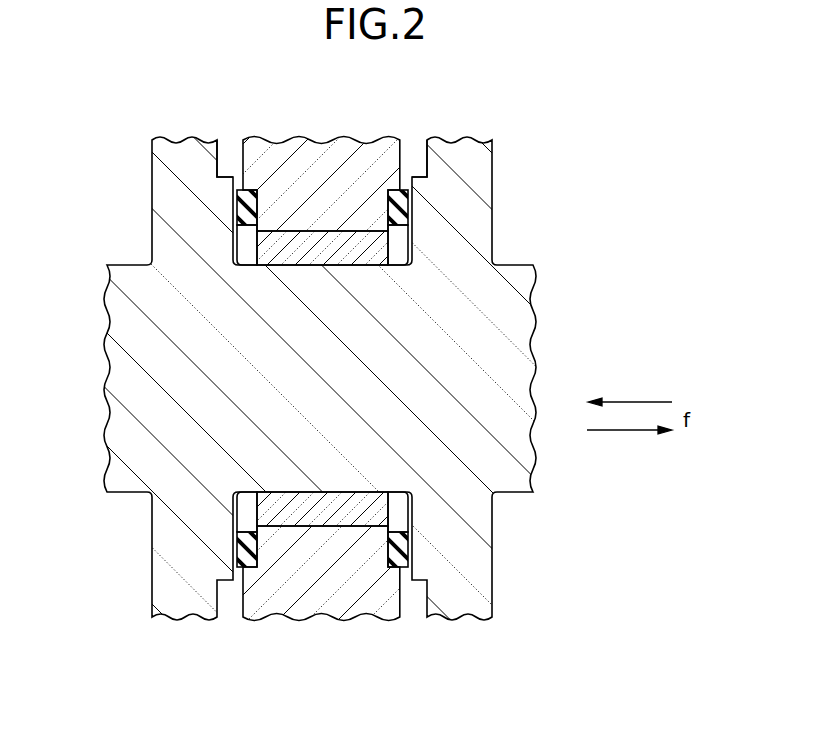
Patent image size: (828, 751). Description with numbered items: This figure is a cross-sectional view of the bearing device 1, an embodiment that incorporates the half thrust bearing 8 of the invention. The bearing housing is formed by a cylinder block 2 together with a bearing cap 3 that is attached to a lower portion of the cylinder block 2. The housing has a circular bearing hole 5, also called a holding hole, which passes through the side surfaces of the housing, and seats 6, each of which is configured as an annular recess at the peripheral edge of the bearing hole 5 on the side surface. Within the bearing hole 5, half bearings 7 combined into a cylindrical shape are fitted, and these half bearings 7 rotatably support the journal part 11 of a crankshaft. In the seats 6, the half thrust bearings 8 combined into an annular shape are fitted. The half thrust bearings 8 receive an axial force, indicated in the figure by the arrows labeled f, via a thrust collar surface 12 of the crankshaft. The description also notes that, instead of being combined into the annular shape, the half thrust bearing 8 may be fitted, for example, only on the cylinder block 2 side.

The bearing device 1 is at (549, 169).
The cylinder block 2 is at (325, 150).
The bearing cap 3 is at (308, 612).
The bearing hole 5 is at (307, 243).
The seat 6 is at (408, 203).
The half bearing 7 is at (398, 243).
The half thrust bearing 8 is at (247, 224).
The journal part 11 is at (267, 415).
The thrust collar surface 12 is at (223, 177).